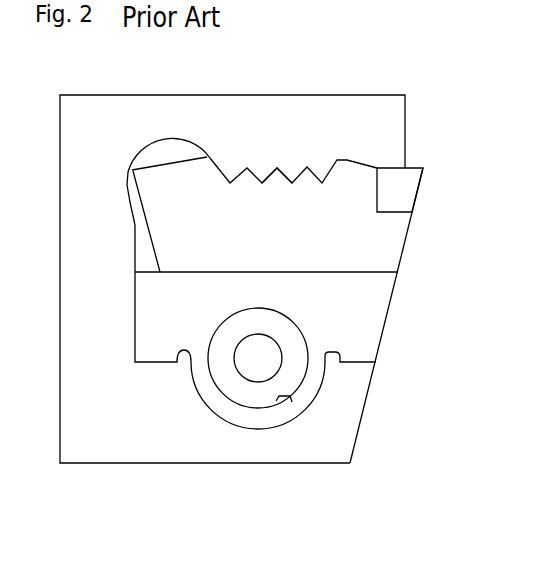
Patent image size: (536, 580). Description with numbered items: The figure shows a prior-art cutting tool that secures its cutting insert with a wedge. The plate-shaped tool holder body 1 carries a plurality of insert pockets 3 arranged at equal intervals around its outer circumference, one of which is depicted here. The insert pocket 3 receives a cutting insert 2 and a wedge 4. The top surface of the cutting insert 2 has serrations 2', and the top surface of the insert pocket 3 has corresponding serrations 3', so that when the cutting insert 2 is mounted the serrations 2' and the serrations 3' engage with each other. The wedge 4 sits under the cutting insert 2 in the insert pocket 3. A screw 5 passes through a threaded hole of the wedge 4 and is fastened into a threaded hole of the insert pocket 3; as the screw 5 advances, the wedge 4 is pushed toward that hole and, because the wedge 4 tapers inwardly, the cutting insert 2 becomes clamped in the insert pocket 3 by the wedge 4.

The tool holder body 1 is at (133, 450).
The cutting insert 2 is at (275, 298).
The serrations 2' is at (293, 203).
The insert pocket 3 is at (169, 116).
The serrations 3' is at (277, 122).
The wedge 4 is at (373, 320).
The screw 5 is at (293, 378).